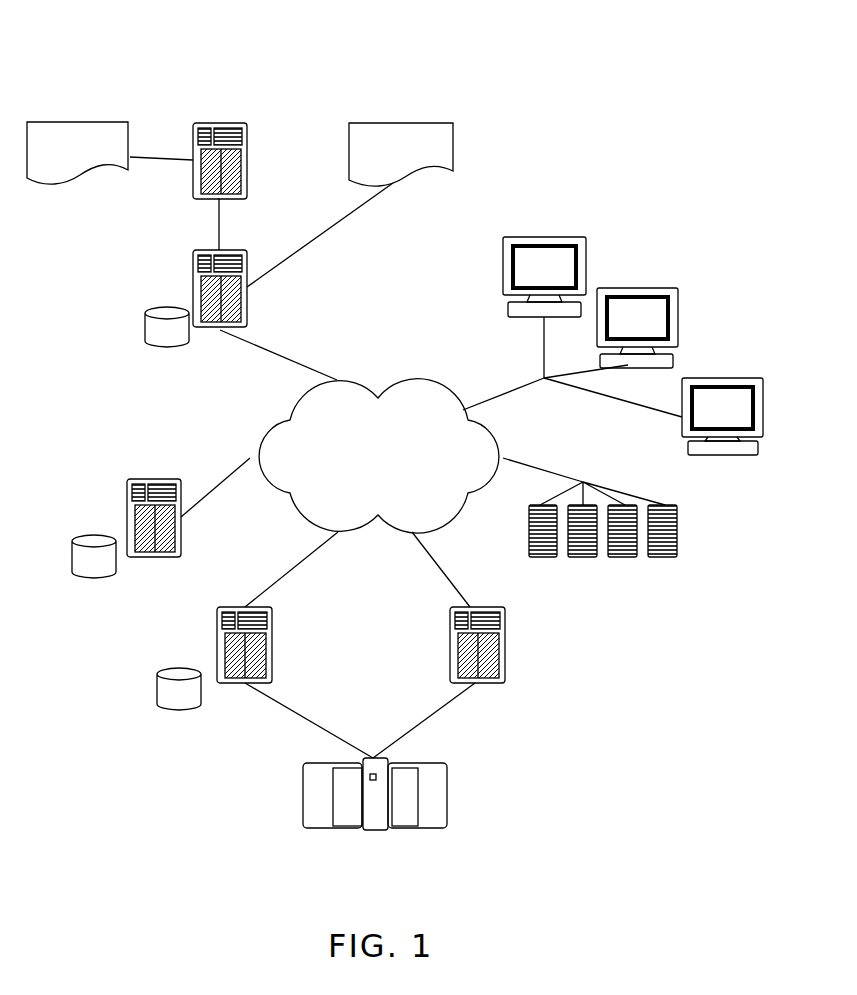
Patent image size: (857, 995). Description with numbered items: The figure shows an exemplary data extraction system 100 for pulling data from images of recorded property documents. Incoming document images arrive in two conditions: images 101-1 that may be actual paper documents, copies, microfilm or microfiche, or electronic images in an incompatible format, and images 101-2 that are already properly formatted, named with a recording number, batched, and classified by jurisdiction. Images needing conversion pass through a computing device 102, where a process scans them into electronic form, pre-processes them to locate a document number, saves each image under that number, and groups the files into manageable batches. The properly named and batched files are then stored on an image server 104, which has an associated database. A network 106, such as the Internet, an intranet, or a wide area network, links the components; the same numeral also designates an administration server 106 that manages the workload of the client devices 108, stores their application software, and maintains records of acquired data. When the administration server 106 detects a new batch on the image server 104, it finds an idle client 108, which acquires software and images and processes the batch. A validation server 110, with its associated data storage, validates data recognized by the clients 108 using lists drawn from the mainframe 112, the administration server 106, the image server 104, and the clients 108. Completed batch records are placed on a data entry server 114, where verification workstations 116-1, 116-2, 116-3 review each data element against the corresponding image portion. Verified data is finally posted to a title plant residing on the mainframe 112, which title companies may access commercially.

The data extraction system 100 is at (654, 66).
The images requiring conversion 101-1 is at (78, 122).
The properly formatted images 101-2 is at (492, 147).
The computing device 102 is at (248, 157).
The image server 104 is at (248, 302).
The network 106 is at (392, 467).
The client devices 108 is at (663, 503).
The validation server 110 is at (272, 640).
The mainframe 112 is at (447, 790).
The data entry server 114 is at (505, 638).
The verification workstation 116-1 is at (628, 245).
The verification workstation 116-2 is at (718, 302).
The verification workstation 116-3 is at (802, 410).